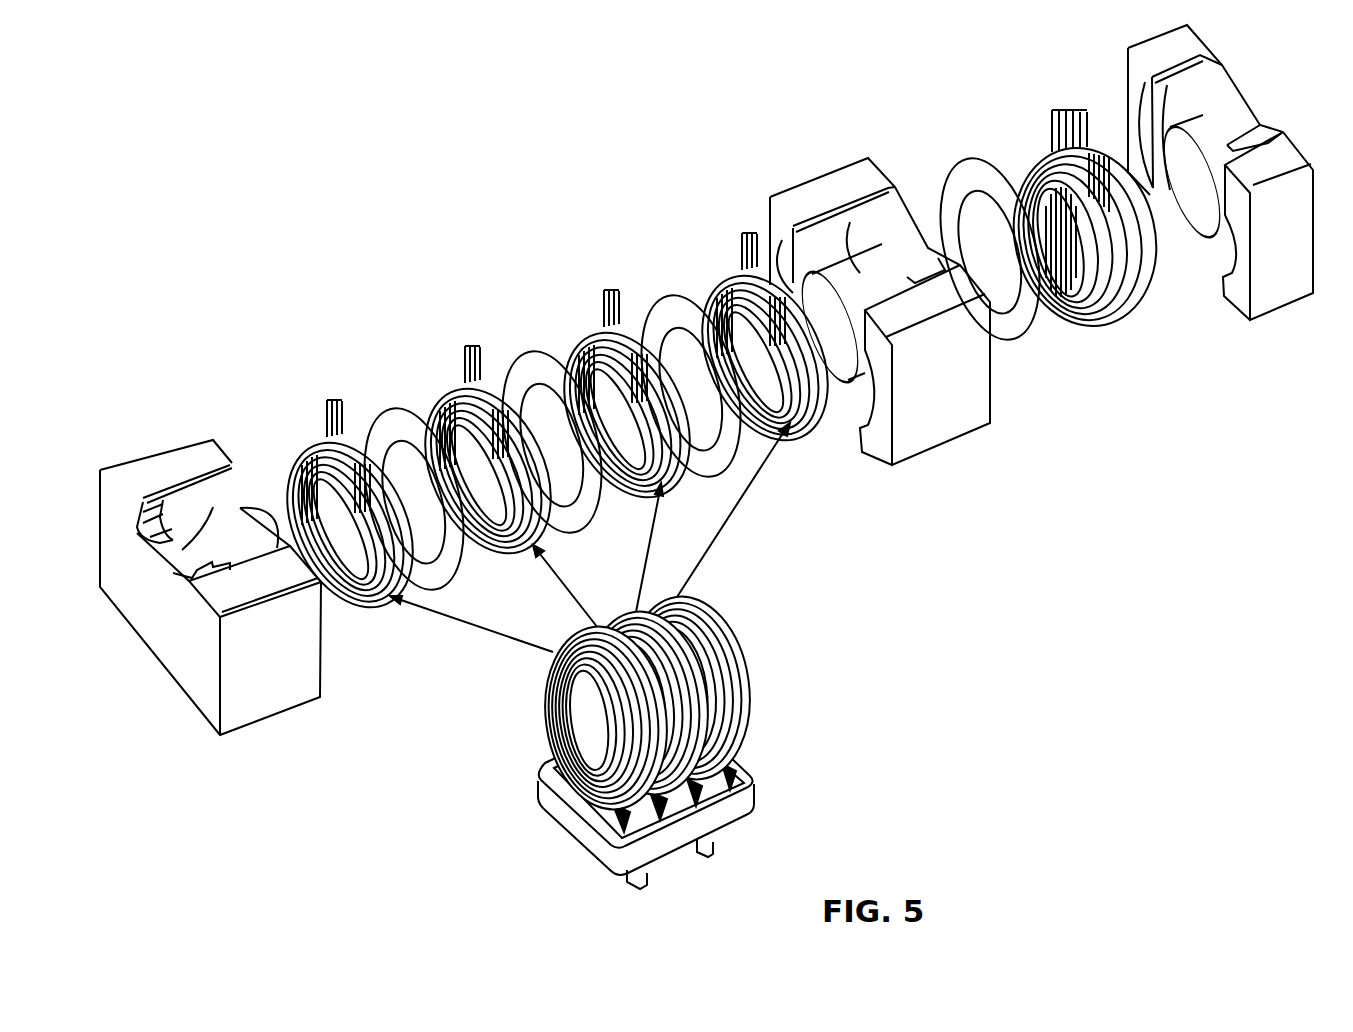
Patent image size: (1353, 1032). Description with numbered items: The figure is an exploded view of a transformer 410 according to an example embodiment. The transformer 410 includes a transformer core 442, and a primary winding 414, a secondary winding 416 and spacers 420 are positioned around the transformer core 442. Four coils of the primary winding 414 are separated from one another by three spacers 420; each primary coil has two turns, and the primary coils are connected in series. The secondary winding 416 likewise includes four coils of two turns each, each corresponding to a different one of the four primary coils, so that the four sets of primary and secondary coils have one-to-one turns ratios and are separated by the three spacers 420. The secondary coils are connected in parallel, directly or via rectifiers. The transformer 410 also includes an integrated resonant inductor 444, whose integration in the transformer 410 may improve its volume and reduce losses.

The transformer 410 is at (293, 97).
The primary winding 414 is at (479, 275).
The secondary winding 416 is at (585, 779).
The spacer 420 is at (717, 345).
The transformer core 442 is at (185, 676).
The integrated resonant inductor 444 is at (1113, 50).